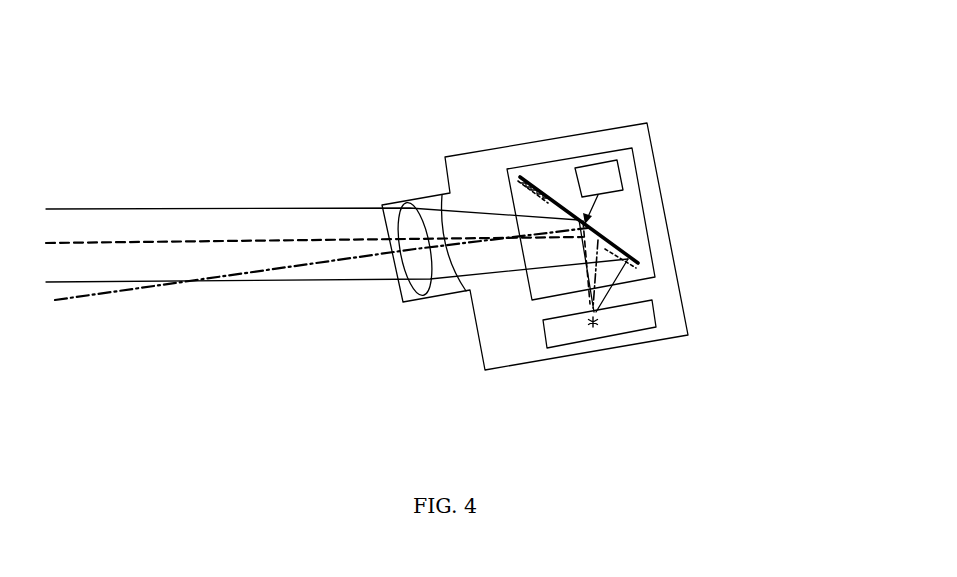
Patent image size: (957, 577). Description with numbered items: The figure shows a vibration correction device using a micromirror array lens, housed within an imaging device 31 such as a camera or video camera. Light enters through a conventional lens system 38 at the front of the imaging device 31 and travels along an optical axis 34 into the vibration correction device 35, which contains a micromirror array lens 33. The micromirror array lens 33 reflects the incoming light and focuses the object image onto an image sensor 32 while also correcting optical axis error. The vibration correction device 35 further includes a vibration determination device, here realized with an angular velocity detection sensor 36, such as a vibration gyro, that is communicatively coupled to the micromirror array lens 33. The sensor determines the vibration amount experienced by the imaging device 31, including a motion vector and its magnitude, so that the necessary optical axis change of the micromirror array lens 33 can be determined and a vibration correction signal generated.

The imaging device 31 is at (468, 183).
The image sensor 32 is at (635, 327).
The micromirror array lens 33 is at (626, 250).
The optical axis 34 is at (223, 278).
The vibration correction device 35 is at (633, 168).
The angular velocity detection sensor 36 is at (587, 168).
The lens system 38 is at (429, 292).